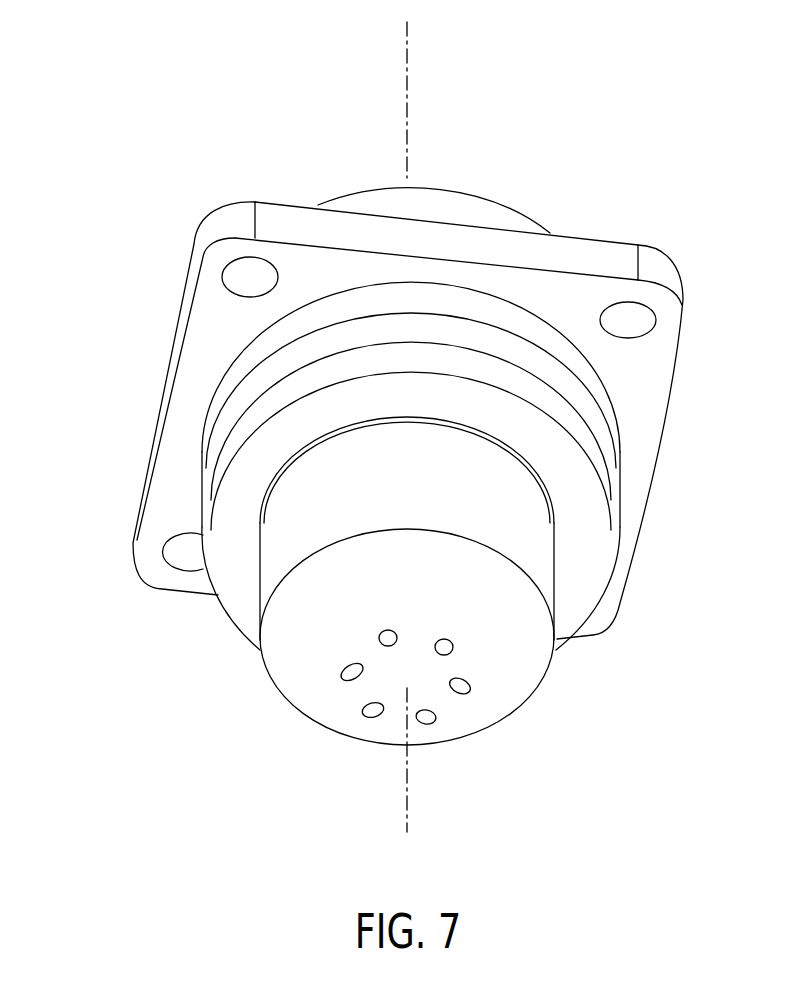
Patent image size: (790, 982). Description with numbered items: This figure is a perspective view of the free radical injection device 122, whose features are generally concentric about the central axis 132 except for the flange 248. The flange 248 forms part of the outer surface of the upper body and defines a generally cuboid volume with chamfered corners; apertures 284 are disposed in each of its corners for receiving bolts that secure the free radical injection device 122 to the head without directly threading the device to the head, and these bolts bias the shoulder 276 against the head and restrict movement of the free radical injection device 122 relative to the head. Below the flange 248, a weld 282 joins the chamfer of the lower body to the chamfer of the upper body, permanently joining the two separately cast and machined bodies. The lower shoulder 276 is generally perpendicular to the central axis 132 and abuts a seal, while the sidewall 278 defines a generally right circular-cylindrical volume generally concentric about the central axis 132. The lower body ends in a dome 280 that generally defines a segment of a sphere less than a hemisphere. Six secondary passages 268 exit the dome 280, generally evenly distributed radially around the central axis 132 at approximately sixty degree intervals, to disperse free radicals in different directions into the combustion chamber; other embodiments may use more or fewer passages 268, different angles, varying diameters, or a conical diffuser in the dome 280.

The free radical injection device 122 is at (624, 119).
The central axis 132 is at (405, 810).
The first flange 248 is at (670, 407).
The secondary passages 268 is at (384, 629).
The lower shoulder 276 is at (600, 518).
The sidewall 278 is at (283, 558).
The dome 280 is at (524, 687).
The weld 282 is at (307, 377).
The apertures 284 is at (237, 257).